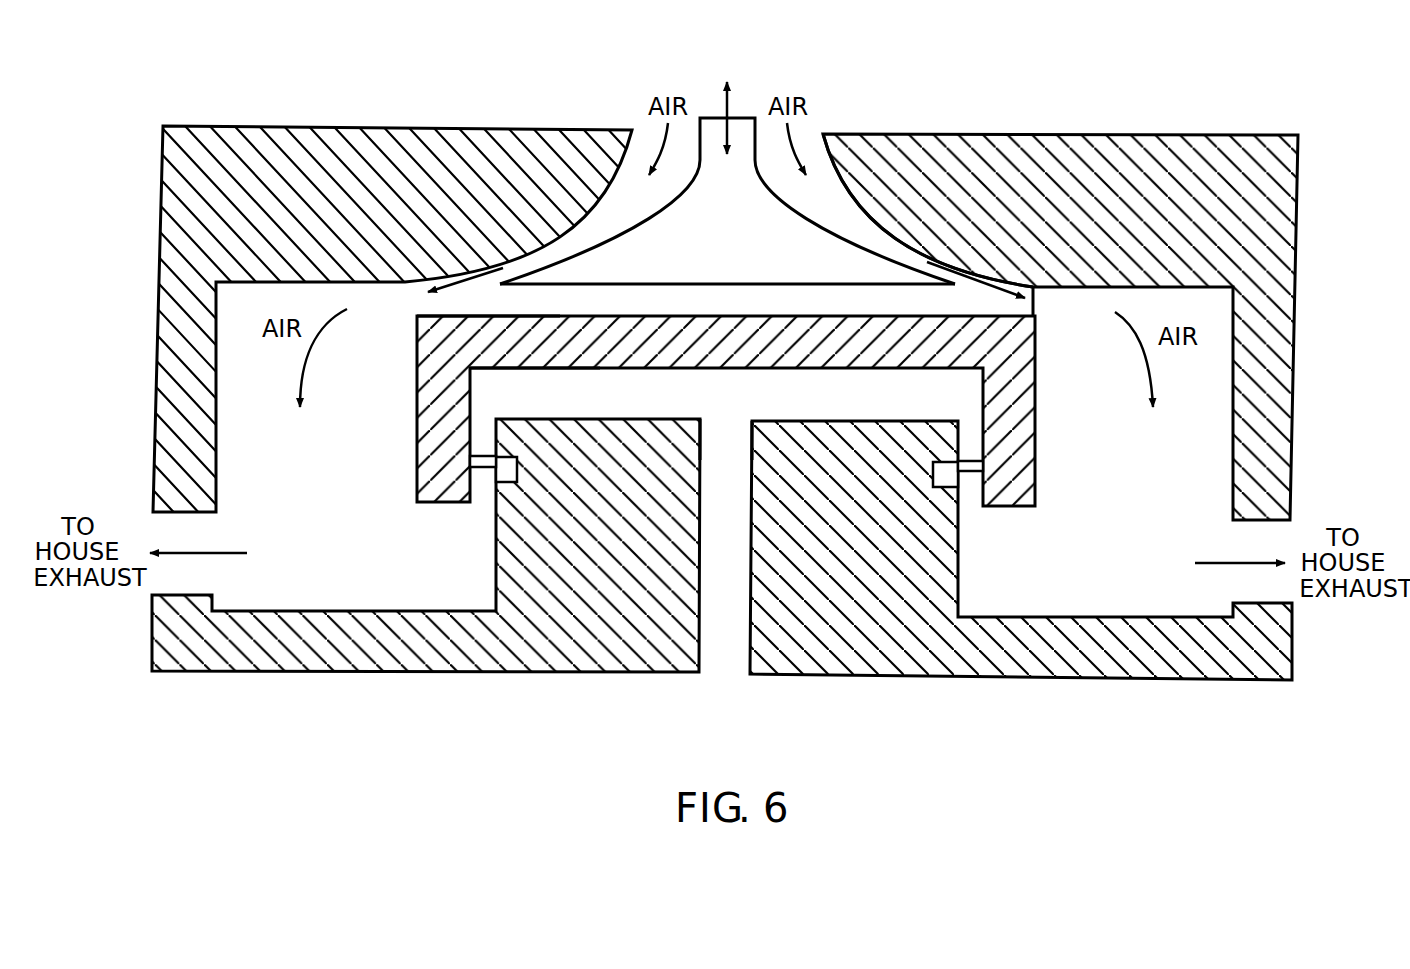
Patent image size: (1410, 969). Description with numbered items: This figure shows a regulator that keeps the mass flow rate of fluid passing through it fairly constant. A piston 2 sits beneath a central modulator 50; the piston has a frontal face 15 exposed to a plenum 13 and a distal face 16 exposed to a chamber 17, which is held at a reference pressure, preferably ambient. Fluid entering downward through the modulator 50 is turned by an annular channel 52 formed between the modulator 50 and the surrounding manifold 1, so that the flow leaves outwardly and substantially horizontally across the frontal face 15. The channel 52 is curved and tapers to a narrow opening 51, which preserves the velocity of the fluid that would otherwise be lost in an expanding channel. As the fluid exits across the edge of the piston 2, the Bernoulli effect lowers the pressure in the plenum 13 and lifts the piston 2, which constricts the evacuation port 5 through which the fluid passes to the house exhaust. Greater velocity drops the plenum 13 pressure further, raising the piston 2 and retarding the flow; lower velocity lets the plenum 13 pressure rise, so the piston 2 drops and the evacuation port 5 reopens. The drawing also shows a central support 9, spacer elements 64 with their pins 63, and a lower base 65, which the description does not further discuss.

The manifold 1 is at (997, 134).
The piston 2 is at (711, 351).
The evacuation port 5 is at (998, 300).
The pedestal 9 is at (750, 676).
The plenum 13 is at (706, 312).
The frontal face 15 is at (553, 316).
The distal face 16 is at (533, 369).
The chamber 17 is at (726, 421).
The modulator 50 is at (737, 118).
The narrow opening 51 is at (912, 262).
The annular channel 52 is at (825, 187).
The pin 63 is at (482, 468).
The spacer 64 is at (510, 457).
The base plate 65 is at (463, 690).